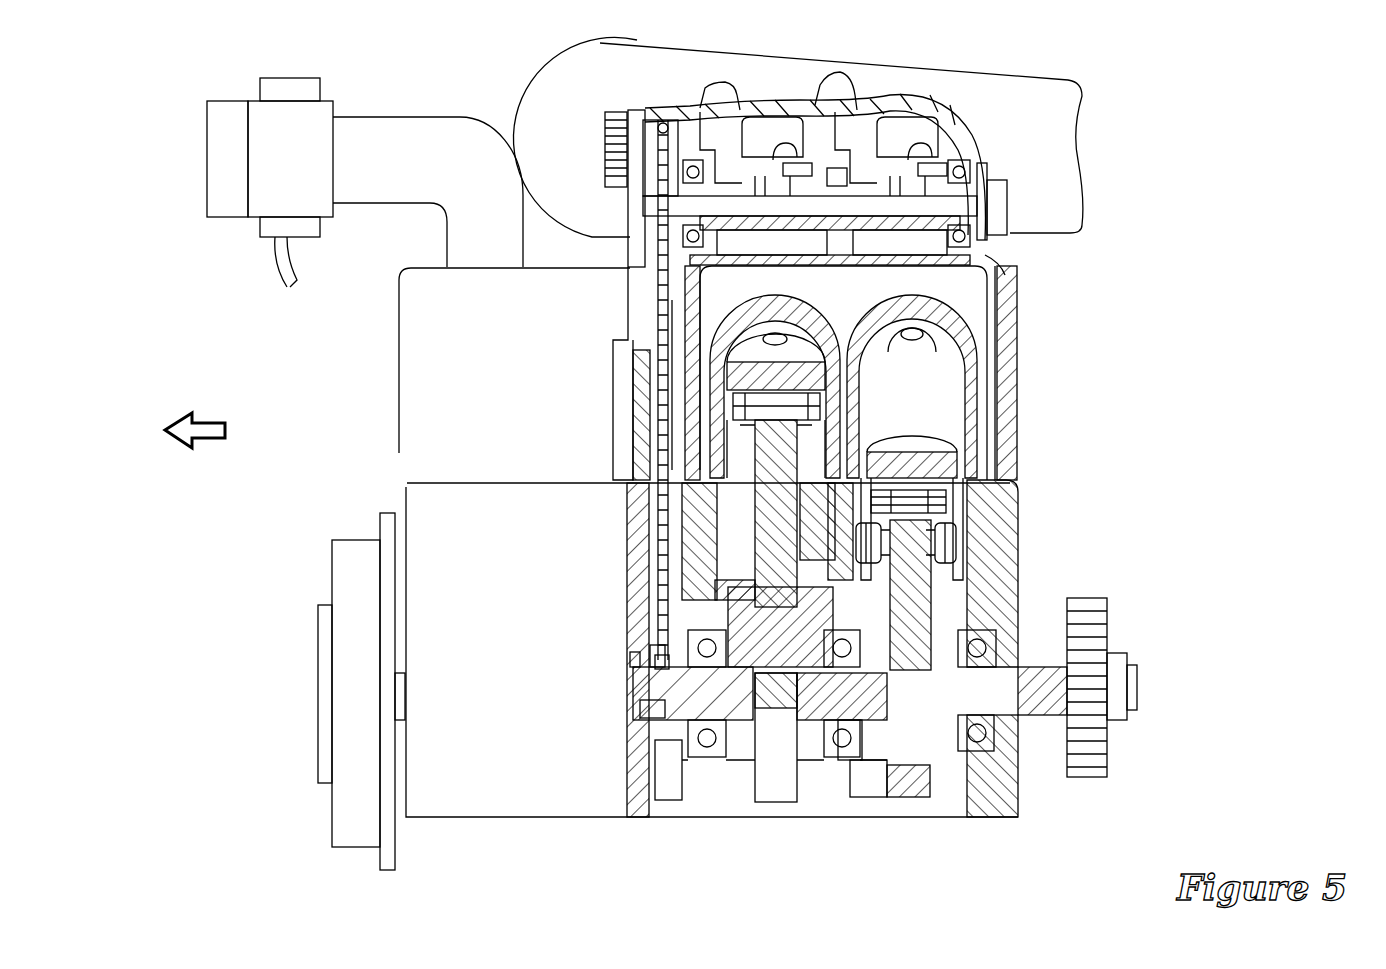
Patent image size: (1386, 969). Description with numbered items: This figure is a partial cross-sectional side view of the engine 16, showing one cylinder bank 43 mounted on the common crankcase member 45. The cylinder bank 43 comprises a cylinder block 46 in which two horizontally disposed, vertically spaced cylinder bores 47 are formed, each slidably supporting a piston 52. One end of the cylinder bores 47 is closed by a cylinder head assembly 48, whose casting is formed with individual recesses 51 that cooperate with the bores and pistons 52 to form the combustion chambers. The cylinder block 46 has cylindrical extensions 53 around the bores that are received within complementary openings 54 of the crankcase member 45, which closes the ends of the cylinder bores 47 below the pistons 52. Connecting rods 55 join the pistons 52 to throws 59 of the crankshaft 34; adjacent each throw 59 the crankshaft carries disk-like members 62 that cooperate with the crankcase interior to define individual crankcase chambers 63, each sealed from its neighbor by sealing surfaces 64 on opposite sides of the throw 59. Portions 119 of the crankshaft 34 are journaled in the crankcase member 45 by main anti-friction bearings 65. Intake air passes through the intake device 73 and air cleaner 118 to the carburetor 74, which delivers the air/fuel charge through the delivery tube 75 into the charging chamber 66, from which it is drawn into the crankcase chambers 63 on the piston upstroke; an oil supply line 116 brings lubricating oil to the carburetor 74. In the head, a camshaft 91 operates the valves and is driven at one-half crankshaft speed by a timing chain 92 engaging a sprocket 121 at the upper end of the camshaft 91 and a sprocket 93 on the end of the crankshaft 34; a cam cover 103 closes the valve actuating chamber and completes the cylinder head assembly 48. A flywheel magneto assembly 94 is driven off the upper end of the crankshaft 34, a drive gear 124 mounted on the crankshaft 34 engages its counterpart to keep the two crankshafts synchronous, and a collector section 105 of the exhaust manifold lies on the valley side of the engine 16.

The engine 16 is at (1105, 178).
The crankshaft 34 is at (837, 717).
The cylinder bank 43 is at (896, 367).
The crankcase member 45 is at (1000, 805).
The cylinder block 46 is at (1005, 385).
The cylinder bore 47 is at (893, 412).
The cylinder head assembly 48 is at (1000, 268).
The recess 51 is at (745, 355).
The piston 52 is at (980, 508).
The cylindrical extension 53 is at (958, 552).
The opening 54 is at (960, 512).
The connecting rod 55 is at (760, 440).
The throw 59 is at (740, 630).
The disk-like member 62 is at (950, 605).
The crankcase chamber 63 is at (790, 800).
The sealing surface 64 is at (838, 530).
The main anti-friction bearing 65 is at (1000, 652).
The charging chamber 66 is at (411, 300).
The intake device 73 is at (245, 183).
The carburetor 74 is at (320, 100).
The delivery tube 75 is at (388, 140).
The camshaft 91 is at (800, 205).
The timing chain 92 is at (670, 440).
The sprocket 93 is at (660, 122).
The flywheel magneto assembly 94 is at (350, 590).
The cam cover 103 is at (1002, 170).
The collector section 105 is at (622, 68).
The oil supply line 116 is at (276, 265).
The air cleaner 118 is at (207, 128).
The crankshaft portion 119 is at (640, 700).
The sprocket 121 is at (650, 662).
The drive gear 124 is at (1095, 645).